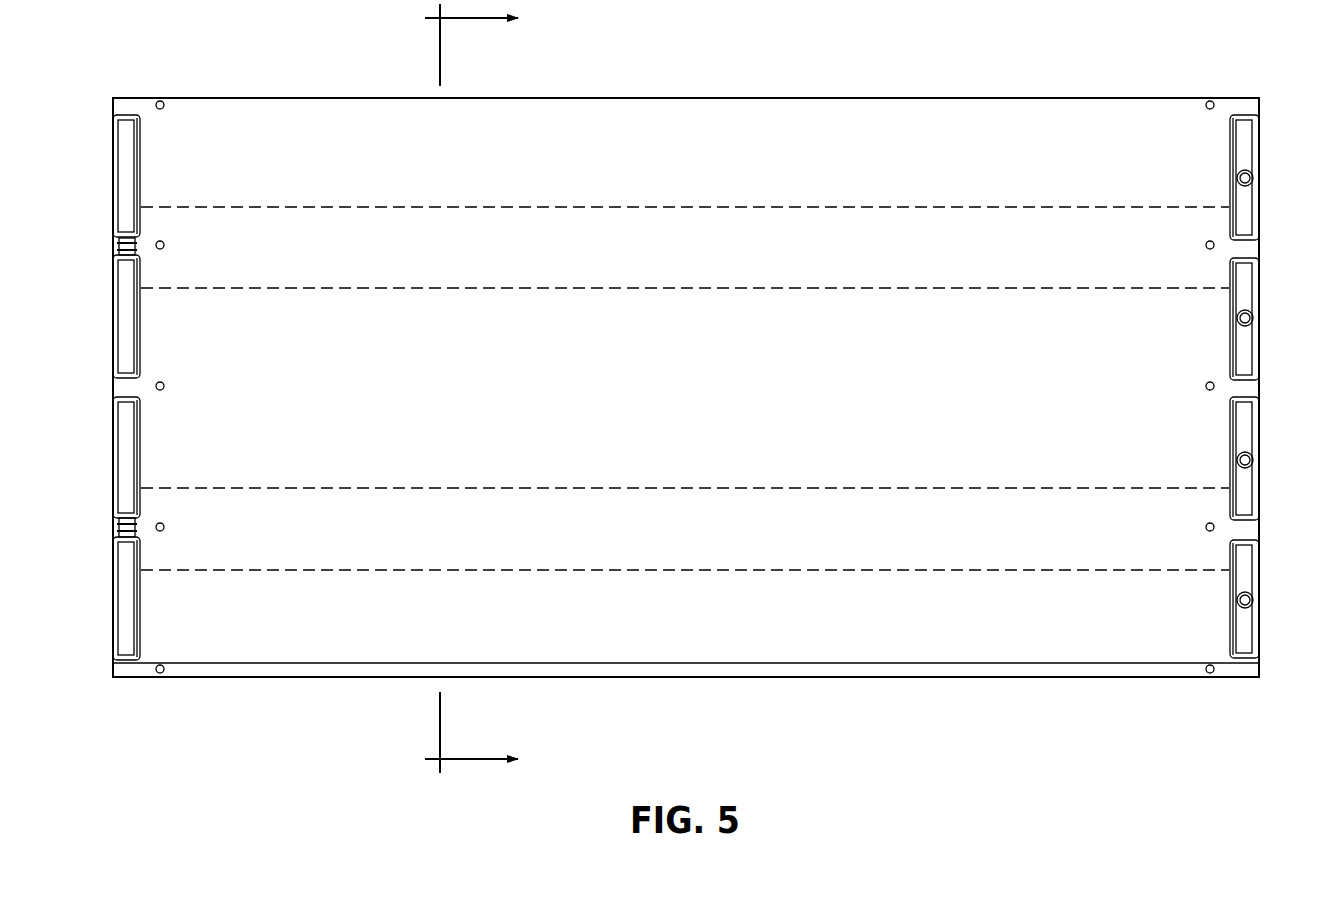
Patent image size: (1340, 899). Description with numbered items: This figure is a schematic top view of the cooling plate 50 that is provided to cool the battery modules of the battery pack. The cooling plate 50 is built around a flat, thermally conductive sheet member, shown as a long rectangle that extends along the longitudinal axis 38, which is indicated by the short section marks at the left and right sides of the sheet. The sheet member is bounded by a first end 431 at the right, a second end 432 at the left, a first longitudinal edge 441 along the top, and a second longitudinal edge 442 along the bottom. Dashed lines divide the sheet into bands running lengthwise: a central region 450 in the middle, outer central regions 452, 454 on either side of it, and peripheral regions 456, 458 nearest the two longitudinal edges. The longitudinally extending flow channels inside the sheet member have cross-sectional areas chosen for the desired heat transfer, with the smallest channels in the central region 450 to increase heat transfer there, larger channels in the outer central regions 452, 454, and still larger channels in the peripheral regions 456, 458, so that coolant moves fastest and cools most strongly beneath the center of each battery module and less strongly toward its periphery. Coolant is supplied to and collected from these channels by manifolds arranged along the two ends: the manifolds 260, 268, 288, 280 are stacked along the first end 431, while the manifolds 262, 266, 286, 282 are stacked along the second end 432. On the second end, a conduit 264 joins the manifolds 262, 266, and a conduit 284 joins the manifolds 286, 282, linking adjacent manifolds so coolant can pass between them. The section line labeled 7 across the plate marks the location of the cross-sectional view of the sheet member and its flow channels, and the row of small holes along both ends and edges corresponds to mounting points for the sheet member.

The cooling plate 50 is at (816, 98).
The section line 7- 7 is at (480, 388).
The longitudinal axis 38 is at (100, 388).
The first end 431 is at (1260, 108).
The second end 432 is at (113, 108).
The first longitudinal edge 441 is at (1145, 98).
The second longitudinal edge 442 is at (1063, 677).
The central region 450 is at (692, 403).
The outer central region 452 is at (692, 261).
The outer central region 454 is at (692, 542).
The peripheral region 456 is at (692, 163).
The peripheral region 458 is at (692, 632).
The manifold 260 is at (1246, 146).
The manifold 262 is at (124, 177).
The conduit 264 is at (124, 247).
The manifold 266 is at (124, 299).
The manifold 268 is at (1246, 291).
The manifold 280 is at (1246, 570).
The manifold 282 is at (124, 598).
The conduit 284 is at (124, 527).
The manifold 286 is at (124, 458).
The manifold 288 is at (1246, 431).